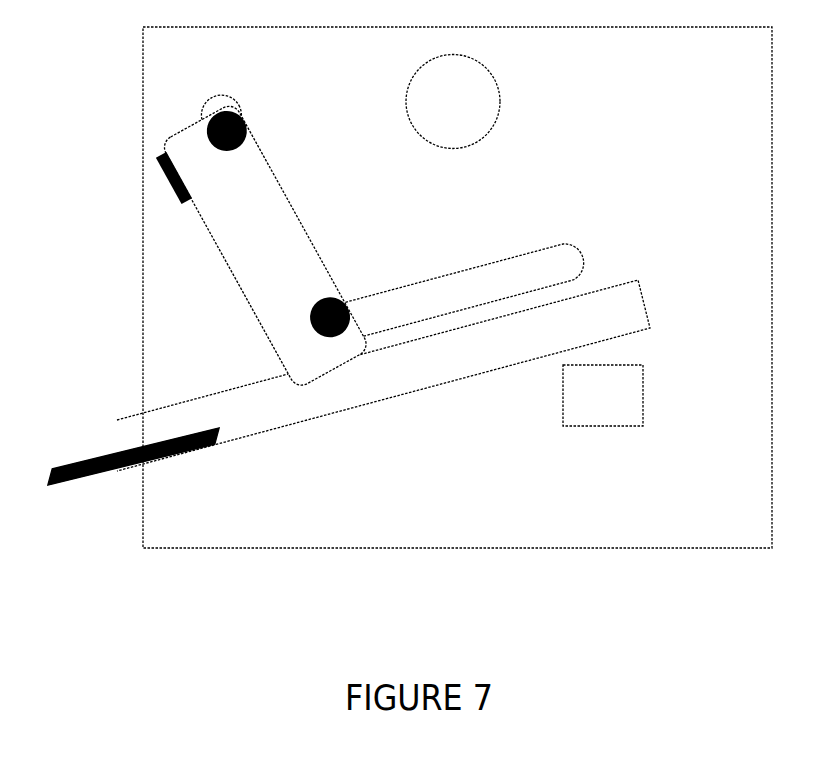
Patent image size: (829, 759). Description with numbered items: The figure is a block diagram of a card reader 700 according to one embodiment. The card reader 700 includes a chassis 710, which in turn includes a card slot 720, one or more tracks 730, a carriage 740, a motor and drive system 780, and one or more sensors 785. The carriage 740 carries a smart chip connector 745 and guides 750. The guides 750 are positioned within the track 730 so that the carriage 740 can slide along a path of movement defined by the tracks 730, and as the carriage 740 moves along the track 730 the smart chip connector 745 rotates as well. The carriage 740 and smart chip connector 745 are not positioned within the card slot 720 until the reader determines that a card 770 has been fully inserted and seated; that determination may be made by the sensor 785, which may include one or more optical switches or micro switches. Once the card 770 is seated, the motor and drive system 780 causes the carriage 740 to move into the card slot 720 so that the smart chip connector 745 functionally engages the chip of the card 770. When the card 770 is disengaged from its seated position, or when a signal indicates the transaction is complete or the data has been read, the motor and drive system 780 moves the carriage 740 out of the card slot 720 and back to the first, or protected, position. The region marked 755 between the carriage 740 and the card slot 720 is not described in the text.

The card reader 700 is at (678, 633).
The chassis 710 is at (477, 532).
The card slot 720 is at (195, 406).
The track 730 is at (465, 245).
The carriage 740 is at (296, 177).
The smart chip connector 745 is at (158, 198).
The guides 750 is at (254, 114).
The gap 755 is at (313, 415).
The card 770 is at (221, 450).
The motor and drive system 780 is at (469, 111).
The sensor 785 is at (619, 403).